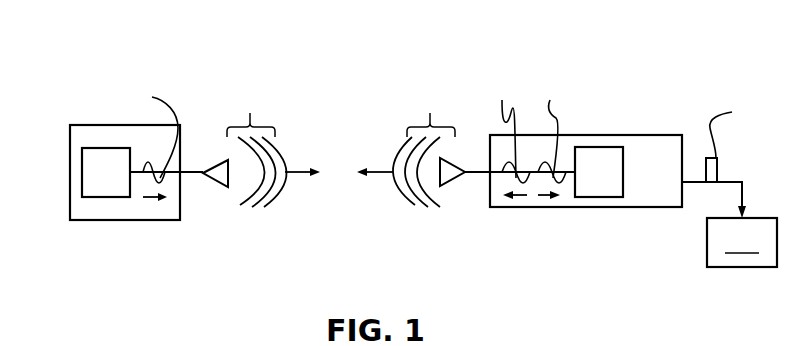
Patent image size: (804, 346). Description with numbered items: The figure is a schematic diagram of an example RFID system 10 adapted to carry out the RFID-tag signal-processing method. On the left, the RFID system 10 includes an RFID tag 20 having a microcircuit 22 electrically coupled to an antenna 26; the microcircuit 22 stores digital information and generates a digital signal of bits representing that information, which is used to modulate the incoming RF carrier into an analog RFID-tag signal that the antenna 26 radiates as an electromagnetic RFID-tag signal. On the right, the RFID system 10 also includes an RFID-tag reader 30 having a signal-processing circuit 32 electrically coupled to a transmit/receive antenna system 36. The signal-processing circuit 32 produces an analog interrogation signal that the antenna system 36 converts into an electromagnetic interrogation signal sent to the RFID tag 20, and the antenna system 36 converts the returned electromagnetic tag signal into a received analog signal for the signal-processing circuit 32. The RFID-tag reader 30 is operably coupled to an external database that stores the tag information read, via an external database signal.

The RFID system 10 is at (642, 87).
The RFID tag 20 is at (95, 125).
The microcircuit 22 is at (93, 185).
The antenna 26 is at (218, 186).
The RFID-tag reader 30 is at (610, 207).
The signal-processing circuit 32 is at (587, 185).
The transmit/receive antenna system 36 is at (453, 176).